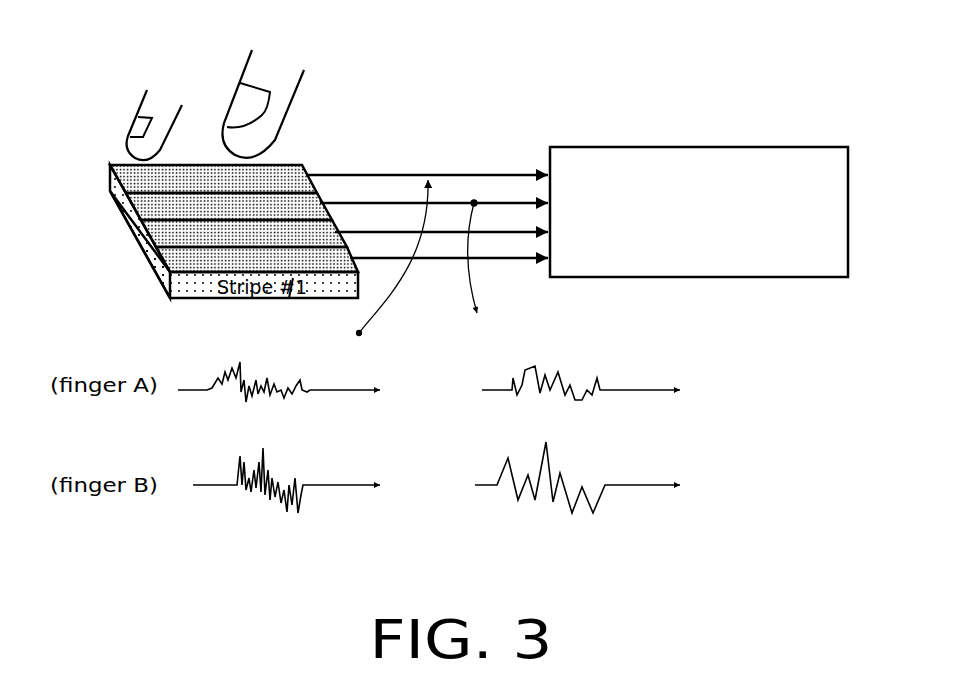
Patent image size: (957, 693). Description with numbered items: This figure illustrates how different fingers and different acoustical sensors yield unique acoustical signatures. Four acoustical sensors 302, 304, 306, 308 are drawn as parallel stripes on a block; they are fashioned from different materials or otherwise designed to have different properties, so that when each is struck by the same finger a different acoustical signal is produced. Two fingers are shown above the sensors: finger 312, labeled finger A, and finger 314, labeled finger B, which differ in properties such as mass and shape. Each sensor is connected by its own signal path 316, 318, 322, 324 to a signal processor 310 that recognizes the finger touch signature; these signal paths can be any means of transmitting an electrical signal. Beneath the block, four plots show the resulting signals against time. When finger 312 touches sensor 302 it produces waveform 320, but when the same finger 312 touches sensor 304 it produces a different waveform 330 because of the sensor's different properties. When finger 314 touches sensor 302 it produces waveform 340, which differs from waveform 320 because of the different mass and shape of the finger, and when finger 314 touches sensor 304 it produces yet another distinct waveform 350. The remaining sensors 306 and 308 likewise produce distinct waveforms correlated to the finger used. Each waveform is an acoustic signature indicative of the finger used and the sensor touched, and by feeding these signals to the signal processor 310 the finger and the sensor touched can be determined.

The acoustical sensor 302 is at (112, 192).
The acoustical sensor 304 is at (128, 223).
The acoustical sensor 306 is at (148, 257).
The acoustical sensor 308 is at (167, 287).
The signal processor 310 is at (682, 147).
The finger 312 is at (132, 130).
The finger 314 is at (298, 108).
The signal path 316 is at (450, 175).
The signal path 318 is at (502, 203).
The waveform 320 is at (313, 393).
The signal path 322 is at (397, 233).
The signal path 324 is at (438, 260).
The waveform 330 is at (610, 393).
The waveform 340 is at (315, 488).
The waveform 350 is at (613, 487).